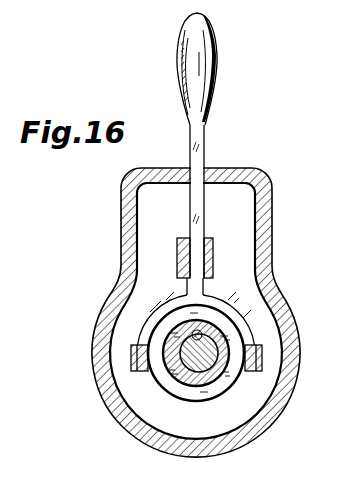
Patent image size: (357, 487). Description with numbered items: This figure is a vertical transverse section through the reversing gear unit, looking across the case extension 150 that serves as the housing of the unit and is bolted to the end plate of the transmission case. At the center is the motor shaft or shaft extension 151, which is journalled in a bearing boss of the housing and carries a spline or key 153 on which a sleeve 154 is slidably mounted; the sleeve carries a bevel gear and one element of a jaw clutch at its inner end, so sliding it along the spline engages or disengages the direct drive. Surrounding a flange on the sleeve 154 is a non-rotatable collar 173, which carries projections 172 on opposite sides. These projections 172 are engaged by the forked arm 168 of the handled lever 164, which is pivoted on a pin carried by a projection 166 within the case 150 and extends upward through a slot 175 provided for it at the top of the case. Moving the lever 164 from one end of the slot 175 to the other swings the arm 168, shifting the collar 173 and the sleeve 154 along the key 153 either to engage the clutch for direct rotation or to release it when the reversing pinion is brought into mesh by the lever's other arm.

The case extension 150 is at (262, 260).
The motor shaft extension 151 is at (167, 370).
The spline or key 153 is at (197, 333).
The sleeve 154 is at (178, 363).
The handled lever 164 is at (200, 153).
The projection 166 is at (185, 237).
The forked arm 168 is at (176, 297).
The projections 172 is at (131, 355).
The non-rotatable collar 173 is at (192, 388).
The slot 175 is at (205, 193).